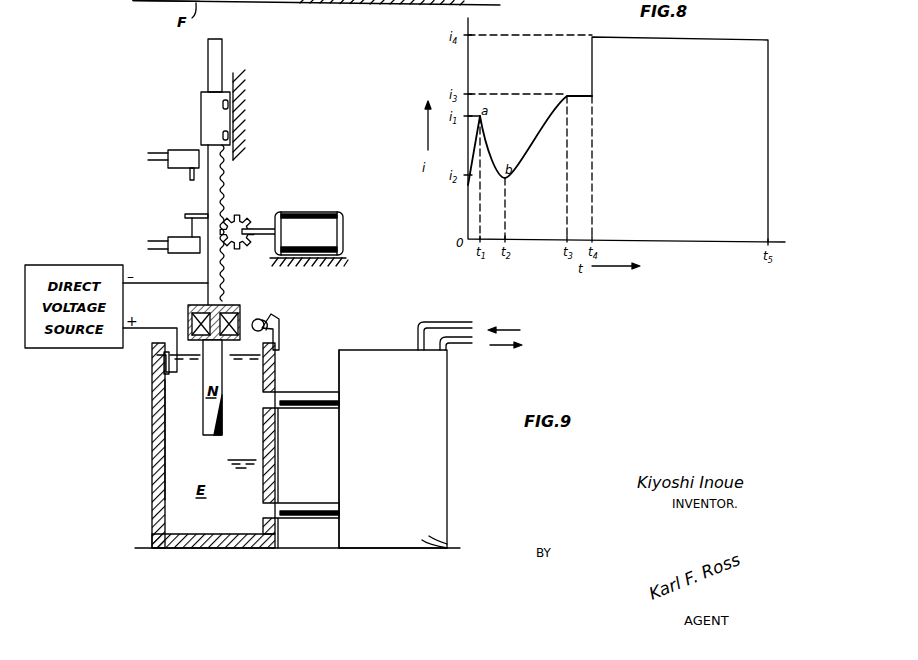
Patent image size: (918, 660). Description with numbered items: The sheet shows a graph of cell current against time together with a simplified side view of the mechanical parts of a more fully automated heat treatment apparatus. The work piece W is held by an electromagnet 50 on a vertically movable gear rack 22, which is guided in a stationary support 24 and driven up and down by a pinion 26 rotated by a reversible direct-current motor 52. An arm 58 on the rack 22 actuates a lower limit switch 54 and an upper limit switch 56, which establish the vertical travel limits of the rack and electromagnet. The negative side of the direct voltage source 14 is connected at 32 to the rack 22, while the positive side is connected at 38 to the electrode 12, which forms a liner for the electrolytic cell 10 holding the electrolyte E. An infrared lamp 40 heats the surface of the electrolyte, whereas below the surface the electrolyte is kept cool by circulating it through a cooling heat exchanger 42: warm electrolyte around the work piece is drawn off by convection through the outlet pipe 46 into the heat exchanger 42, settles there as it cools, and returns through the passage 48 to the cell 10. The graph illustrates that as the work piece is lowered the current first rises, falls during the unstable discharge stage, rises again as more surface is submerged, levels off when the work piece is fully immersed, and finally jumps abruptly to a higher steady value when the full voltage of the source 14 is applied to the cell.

The electrolytic cell 10 is at (152, 491).
The electrode 12 is at (158, 444).
The voltage source 14 is at (114, 11).
The gear rack 22 is at (225, 271).
The stationary support 24 is at (201, 109).
The pinion 26 is at (247, 218).
The connection 32 is at (206, 283).
The connection 38 is at (170, 370).
The infrared lamp 40 is at (271, 322).
The cooling heat exchanger 42 is at (404, 455).
The outlet pipe 46 is at (318, 392).
The passage 48 is at (312, 503).
The electromagnet 50 is at (238, 311).
The motor 52 is at (312, 212).
The lower limit switch 54 is at (170, 238).
The upper limit switch 56 is at (183, 150).
The arm 58 is at (190, 213).